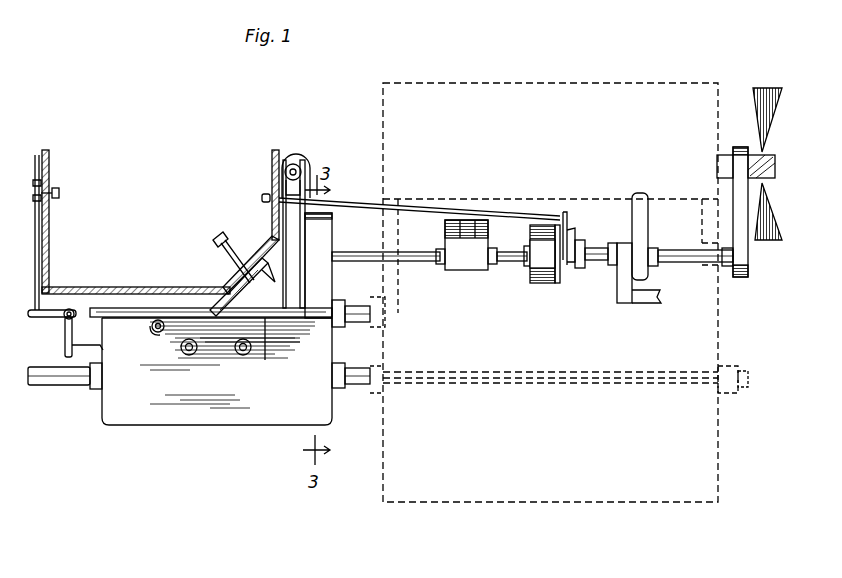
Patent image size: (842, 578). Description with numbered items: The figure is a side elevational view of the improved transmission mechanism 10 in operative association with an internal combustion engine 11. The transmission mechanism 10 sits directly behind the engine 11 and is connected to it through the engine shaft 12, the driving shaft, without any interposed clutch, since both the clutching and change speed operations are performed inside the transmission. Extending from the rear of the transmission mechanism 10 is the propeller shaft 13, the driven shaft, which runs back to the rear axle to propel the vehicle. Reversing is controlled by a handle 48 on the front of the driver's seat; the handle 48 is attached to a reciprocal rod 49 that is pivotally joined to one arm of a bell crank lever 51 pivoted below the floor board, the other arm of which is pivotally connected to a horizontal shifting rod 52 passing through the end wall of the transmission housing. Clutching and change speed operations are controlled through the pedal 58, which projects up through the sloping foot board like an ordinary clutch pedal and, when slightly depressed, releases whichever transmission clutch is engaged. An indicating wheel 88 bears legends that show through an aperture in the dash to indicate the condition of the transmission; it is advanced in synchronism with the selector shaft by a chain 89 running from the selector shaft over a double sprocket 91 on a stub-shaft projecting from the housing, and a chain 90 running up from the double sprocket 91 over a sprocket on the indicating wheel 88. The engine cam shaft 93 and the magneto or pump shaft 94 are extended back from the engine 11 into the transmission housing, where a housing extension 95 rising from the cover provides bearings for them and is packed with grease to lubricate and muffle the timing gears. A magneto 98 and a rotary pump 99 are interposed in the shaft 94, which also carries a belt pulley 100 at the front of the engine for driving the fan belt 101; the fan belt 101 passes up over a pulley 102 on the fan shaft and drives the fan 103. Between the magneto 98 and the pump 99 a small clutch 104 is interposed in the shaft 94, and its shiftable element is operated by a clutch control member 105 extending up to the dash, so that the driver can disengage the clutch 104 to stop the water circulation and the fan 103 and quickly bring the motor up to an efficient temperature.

The transmission mechanism 10 is at (233, 424).
The engine 11 is at (500, 92).
The engine shaft 12 is at (360, 388).
The propeller shaft 13 is at (68, 386).
The handle 48 is at (60, 194).
The reciprocal rod 49 is at (40, 260).
The bell crank lever 51 is at (50, 318).
The horizontal shifting rod 52 is at (100, 348).
The pedal 58 is at (224, 250).
The indicating wheel 88 is at (300, 152).
The chain 89 is at (268, 345).
The chain 90 is at (305, 224).
The double sprocket 91 is at (300, 320).
The engine cam shaft 93 is at (357, 322).
The magneto or pump shaft 94 is at (430, 262).
The housing extension 95 is at (332, 282).
The magneto 98 is at (472, 262).
The rotary pump 99 is at (644, 250).
The belt pulley 100 is at (745, 278).
The fan belt 101 is at (738, 197).
The pulley 102 is at (733, 150).
The fan 103 is at (766, 95).
The small clutch 104 is at (545, 284).
The clutch control member 105 is at (262, 198).